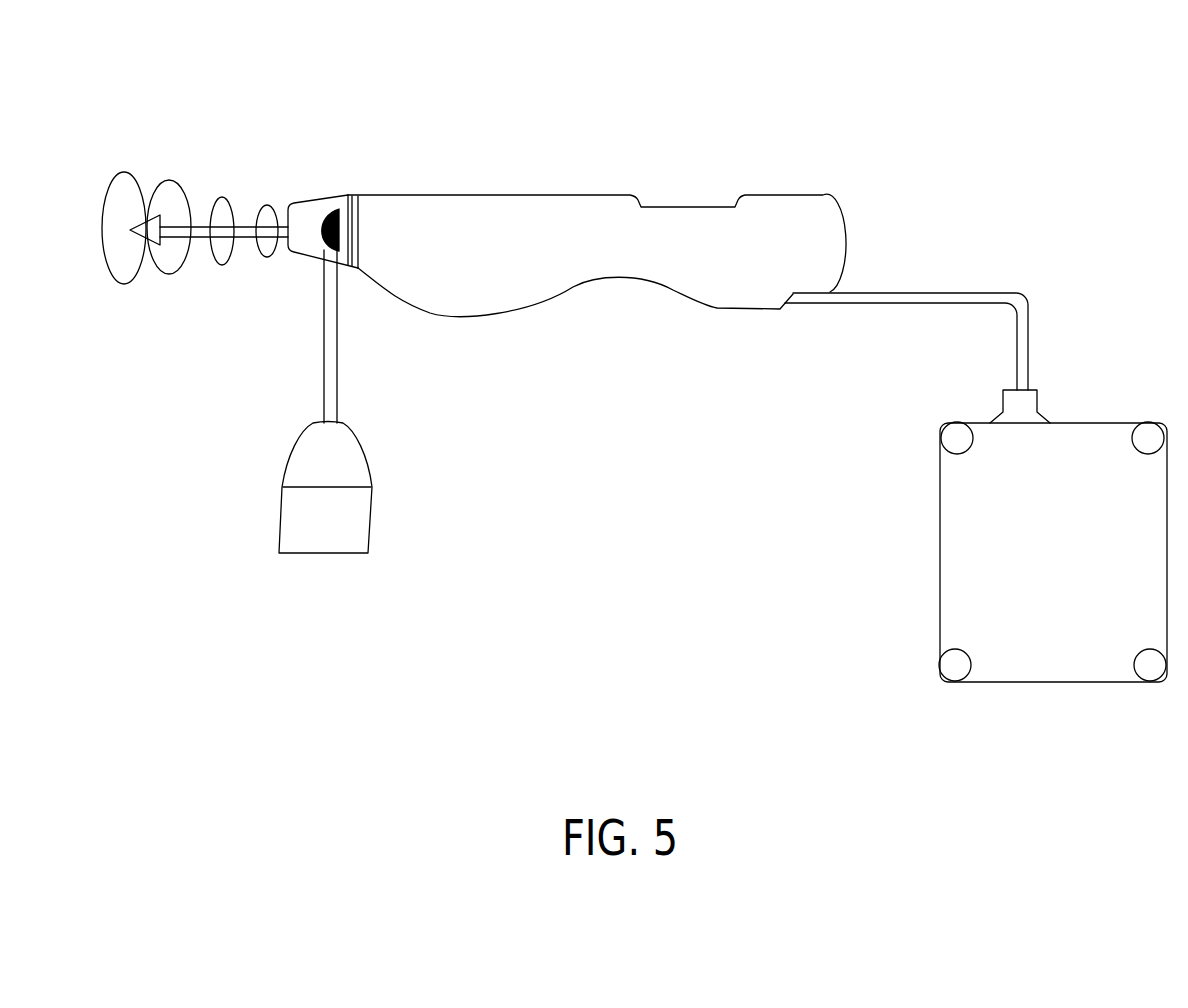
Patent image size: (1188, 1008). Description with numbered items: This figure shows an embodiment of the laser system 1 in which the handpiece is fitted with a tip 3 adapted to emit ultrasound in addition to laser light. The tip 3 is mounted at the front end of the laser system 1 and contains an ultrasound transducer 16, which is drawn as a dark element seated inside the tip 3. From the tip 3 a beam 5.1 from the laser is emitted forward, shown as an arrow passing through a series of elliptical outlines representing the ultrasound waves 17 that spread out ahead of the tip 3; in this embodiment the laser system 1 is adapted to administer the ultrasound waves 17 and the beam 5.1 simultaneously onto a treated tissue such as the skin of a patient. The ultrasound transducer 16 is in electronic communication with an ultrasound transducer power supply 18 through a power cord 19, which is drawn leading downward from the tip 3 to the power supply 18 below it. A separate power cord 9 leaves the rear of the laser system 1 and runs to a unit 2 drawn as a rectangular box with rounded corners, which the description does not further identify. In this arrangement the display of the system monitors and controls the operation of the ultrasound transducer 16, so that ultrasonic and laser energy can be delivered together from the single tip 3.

The laser system 1 is at (497, 238).
The base unit / supply tank 2 is at (1002, 512).
The tip 3 is at (310, 215).
The beam from laser 5 5.1 is at (242, 237).
The power cord 9 is at (913, 295).
The ultrasound transducer 16 is at (338, 213).
The ultrasound waves 17 is at (212, 205).
The ultrasound transducer power supply 18 is at (342, 530).
The power cord 19 is at (327, 358).